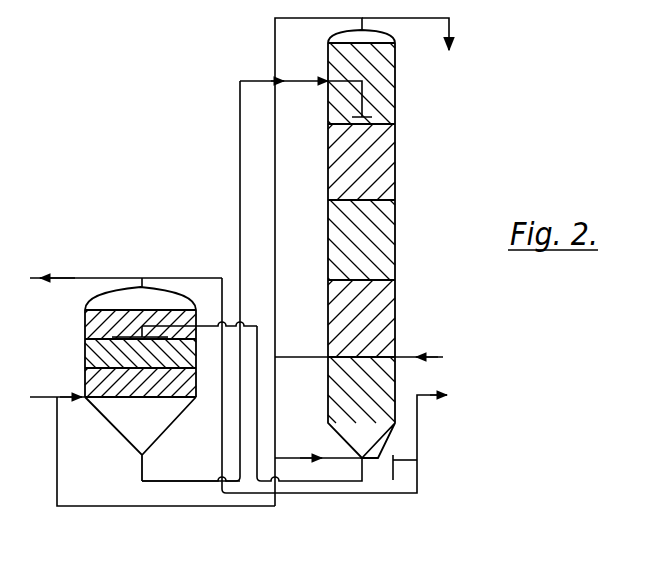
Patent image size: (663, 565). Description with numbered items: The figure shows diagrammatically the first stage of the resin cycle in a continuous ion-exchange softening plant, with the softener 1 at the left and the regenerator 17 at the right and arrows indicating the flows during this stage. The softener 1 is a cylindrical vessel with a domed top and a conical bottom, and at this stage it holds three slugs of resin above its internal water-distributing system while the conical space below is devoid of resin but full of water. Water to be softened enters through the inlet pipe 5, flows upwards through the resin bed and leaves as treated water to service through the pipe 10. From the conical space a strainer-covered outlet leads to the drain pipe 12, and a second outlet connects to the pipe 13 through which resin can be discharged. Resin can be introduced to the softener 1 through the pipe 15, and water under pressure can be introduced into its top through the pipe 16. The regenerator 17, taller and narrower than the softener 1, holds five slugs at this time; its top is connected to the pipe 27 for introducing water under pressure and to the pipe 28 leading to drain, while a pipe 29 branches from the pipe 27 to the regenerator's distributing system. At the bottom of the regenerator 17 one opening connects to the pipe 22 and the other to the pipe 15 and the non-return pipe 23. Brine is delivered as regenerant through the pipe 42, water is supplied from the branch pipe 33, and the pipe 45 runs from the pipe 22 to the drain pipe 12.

The absorber or softener 1 is at (85, 326).
The inlet pipe 5 is at (80, 396).
The pipe to service 10 is at (50, 278).
The drain pipe 12 is at (131, 441).
The resin discharge pipe 13 is at (298, 83).
The resin introduction pipe 15 is at (258, 343).
The pressure water pipe 16 is at (221, 393).
The regenerator 17 is at (396, 138).
The bottom pipe of regenerator 22 is at (384, 450).
The non-return pipe 23 is at (295, 457).
The pressure water pipe to regenerator 27 is at (332, 19).
The regenerator drain pipe 28 is at (436, 20).
The branch pipe 29 is at (313, 360).
The branch water supply pipe 33 is at (57, 443).
The brine pipe 42 is at (441, 357).
The drain connection pipe 45 is at (393, 470).